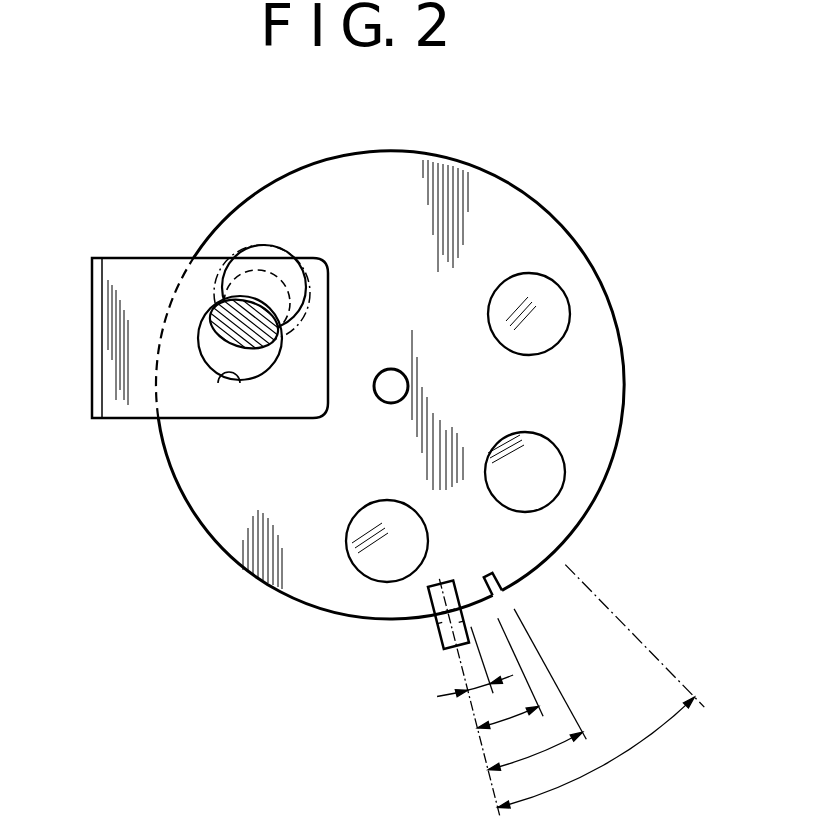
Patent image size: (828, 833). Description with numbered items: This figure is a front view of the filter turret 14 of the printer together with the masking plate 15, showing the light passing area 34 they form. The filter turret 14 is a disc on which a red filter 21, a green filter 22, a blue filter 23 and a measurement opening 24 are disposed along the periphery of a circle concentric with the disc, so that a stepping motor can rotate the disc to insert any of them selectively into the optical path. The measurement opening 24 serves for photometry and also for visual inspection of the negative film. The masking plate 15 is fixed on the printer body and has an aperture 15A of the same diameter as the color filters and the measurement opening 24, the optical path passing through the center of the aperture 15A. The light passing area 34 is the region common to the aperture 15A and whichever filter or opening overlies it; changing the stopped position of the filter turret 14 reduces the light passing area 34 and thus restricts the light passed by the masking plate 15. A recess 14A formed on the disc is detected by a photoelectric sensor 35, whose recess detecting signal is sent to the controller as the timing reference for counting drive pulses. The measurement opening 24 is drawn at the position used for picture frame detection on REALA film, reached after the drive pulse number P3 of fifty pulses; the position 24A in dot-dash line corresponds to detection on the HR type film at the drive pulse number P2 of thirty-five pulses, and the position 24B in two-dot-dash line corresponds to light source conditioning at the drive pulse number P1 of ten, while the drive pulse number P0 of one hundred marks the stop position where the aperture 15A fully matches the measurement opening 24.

The filter turret 14 is at (504, 180).
The recess 14A is at (497, 590).
The masking plate 15 is at (143, 258).
The aperture 15A is at (238, 383).
The red filter 21 is at (568, 315).
The green filter 22 is at (562, 474).
The blue filter 23 is at (360, 568).
The measurement opening 24 is at (257, 353).
The position of measurement opening 24A is at (299, 292).
The position of measurement opening 24B is at (276, 243).
The light passing area 34 is at (222, 338).
The photoelectric sensor 35 is at (437, 628).
The drive pulse number P0 is at (601, 686).
The drive pulse number P1 is at (474, 686).
The drive pulse number P2 is at (510, 712).
The drive pulse number P3 is at (537, 689).